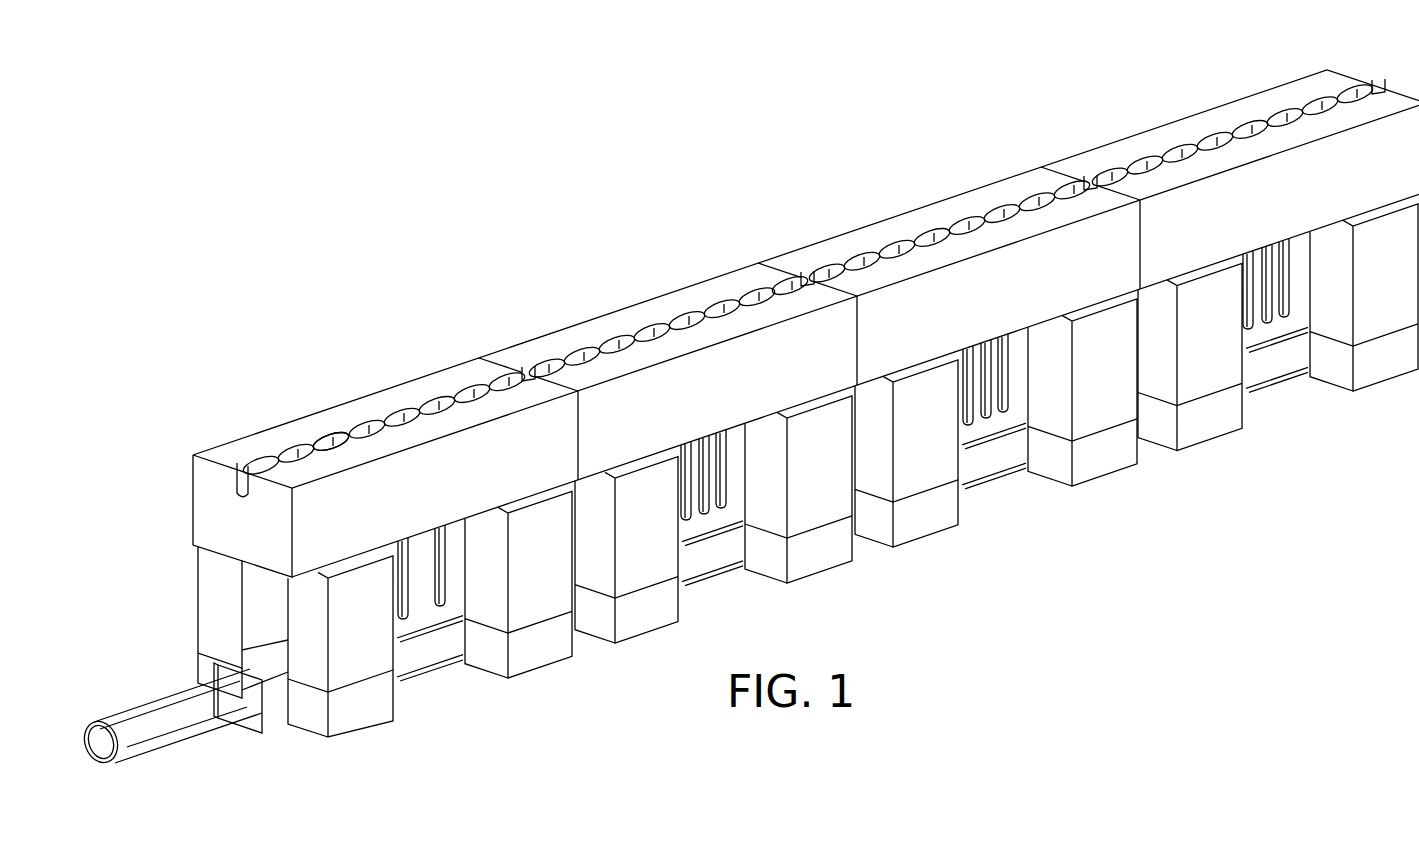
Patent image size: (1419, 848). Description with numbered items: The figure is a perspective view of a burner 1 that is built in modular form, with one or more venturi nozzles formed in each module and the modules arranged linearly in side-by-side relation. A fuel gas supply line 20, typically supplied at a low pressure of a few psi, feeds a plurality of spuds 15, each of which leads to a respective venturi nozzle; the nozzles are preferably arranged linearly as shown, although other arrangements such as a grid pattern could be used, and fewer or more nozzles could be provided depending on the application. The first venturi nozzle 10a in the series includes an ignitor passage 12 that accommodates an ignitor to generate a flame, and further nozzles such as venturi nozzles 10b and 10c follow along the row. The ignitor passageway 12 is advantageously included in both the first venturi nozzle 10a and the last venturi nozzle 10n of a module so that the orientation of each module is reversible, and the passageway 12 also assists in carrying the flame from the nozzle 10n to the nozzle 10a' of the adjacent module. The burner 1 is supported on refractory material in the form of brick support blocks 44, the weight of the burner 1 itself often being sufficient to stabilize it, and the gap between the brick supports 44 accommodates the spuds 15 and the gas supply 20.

The burner 1 is at (668, 258).
The first venturi nozzle 10a is at (243, 424).
The venturi nozzle 10b is at (297, 447).
The venturi nozzle 10c is at (333, 436).
The last venturi nozzle 10n is at (497, 378).
The first venturi nozzle of adjacent module 10a' is at (572, 329).
The ignitor passage 12 is at (236, 482).
The spuds 15 is at (443, 608).
The fuel gas supply line 20 is at (226, 718).
The brick support blocks 44 is at (238, 620).